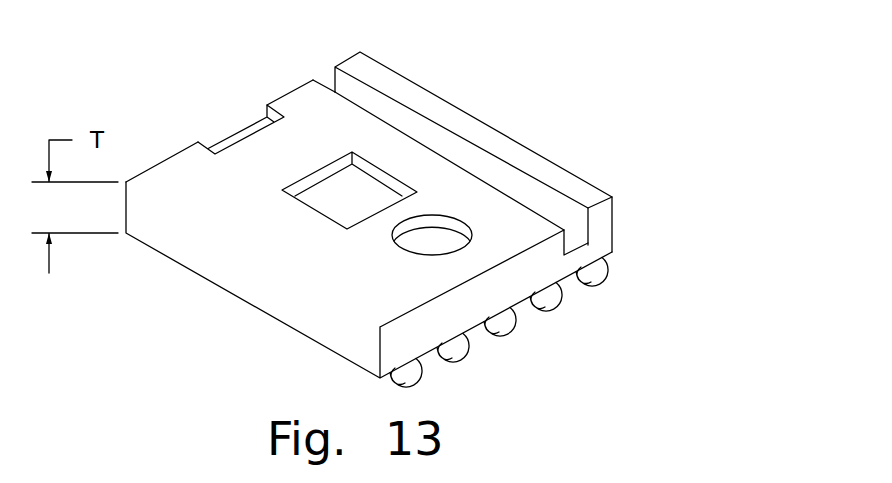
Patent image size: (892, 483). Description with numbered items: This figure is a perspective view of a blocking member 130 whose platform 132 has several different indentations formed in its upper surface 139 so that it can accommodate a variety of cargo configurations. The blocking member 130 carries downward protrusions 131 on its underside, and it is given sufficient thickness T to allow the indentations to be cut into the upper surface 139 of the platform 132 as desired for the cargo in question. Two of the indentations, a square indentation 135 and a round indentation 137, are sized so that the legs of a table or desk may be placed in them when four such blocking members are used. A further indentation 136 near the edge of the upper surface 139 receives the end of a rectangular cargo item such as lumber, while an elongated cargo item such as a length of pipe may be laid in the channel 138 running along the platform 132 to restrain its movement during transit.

The blocking member 130 is at (642, 178).
The downward protrusions 131 is at (562, 297).
The platform 132 is at (522, 155).
The indentation 135 is at (390, 172).
The indentation 136 is at (253, 128).
The indentation 137 is at (440, 258).
The channel 138 is at (343, 82).
The upper surface 139 is at (185, 157).